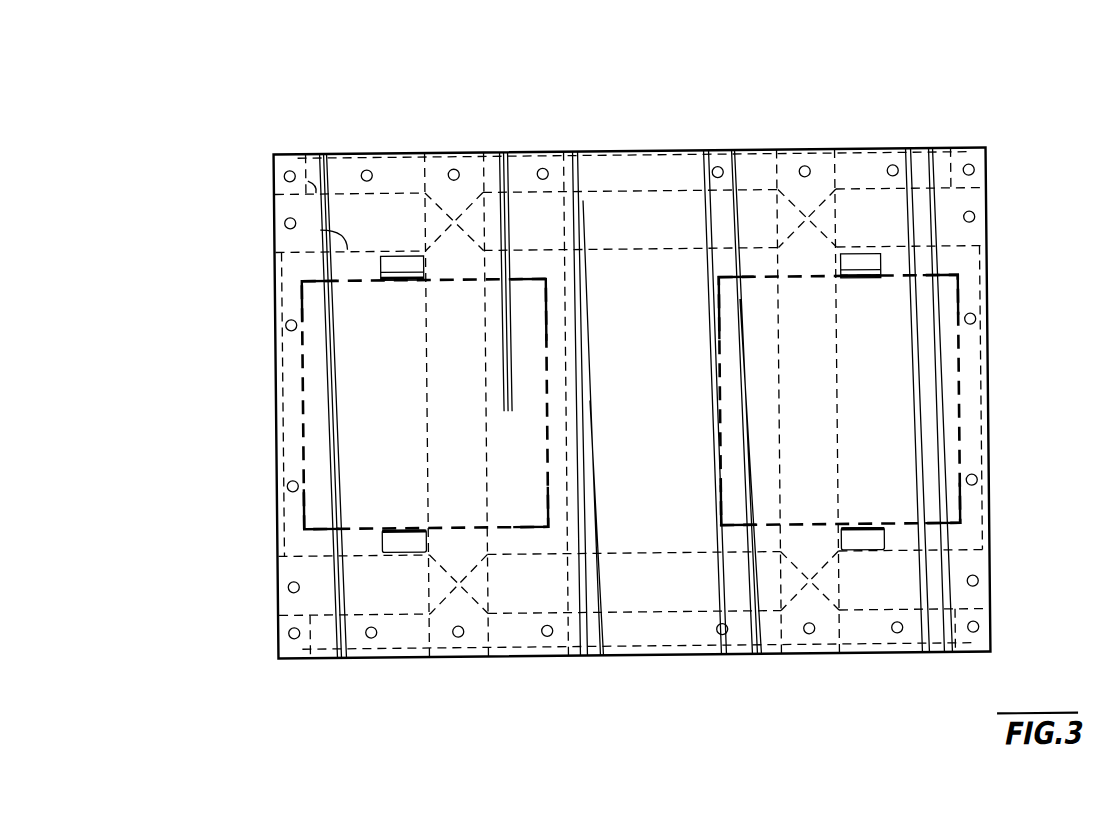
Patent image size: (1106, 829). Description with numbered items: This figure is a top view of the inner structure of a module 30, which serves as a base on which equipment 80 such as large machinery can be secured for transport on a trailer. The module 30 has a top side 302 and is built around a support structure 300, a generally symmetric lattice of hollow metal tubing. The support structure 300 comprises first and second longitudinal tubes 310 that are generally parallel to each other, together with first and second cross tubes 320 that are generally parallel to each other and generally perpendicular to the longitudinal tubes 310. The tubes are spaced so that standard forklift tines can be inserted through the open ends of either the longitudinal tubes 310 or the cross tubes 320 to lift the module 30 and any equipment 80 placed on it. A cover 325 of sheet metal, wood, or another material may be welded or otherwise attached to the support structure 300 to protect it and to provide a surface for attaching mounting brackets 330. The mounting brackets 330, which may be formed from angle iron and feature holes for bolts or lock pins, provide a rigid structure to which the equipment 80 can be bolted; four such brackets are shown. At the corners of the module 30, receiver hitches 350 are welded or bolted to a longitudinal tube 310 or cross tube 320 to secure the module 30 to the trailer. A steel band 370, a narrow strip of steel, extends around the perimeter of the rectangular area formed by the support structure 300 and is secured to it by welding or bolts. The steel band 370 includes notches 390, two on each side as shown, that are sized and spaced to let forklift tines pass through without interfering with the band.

The module 30 is at (396, 115).
The support structure 300 is at (853, 150).
The top side 302 is at (368, 208).
The cover 325 is at (362, 210).
The longitudinal tube 310 is at (778, 458).
The cross tube 320 is at (320, 227).
The mounting bracket 330 is at (387, 527).
The receiver hitch 350 is at (320, 193).
The steel band 370 is at (283, 513).
The notch 390 is at (831, 151).
The equipment 80 is at (718, 294).